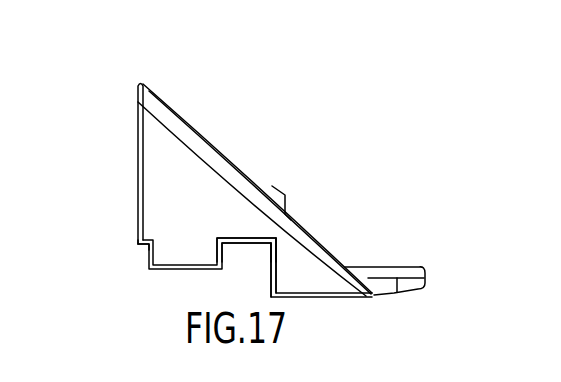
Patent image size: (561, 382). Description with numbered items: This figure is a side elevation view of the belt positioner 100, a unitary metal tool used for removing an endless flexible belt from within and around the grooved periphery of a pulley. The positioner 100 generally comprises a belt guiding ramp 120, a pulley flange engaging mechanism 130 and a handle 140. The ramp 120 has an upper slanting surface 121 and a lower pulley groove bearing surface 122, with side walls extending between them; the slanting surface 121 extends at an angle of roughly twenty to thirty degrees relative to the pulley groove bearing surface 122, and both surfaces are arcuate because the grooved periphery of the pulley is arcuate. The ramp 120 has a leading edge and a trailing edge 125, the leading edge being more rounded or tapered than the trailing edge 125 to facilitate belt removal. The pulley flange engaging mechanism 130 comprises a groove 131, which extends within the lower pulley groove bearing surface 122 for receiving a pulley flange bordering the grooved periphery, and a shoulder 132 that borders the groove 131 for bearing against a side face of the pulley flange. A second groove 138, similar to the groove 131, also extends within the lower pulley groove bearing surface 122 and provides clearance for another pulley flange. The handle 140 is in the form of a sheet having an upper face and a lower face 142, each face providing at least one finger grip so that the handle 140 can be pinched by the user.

The belt positioner 100 is at (112, 249).
The belt guiding ramp 120 is at (230, 142).
The upper slanting surface 121 is at (198, 133).
The lower pulley groove bearing surface 122 is at (183, 270).
The trailing edge 125 is at (188, 142).
The pulley flange engaging mechanism 130 is at (256, 238).
The groove 131 is at (240, 251).
The shoulder 132 is at (279, 271).
The second groove 138 is at (140, 247).
The handle 140 is at (400, 263).
The lower face 142 is at (405, 295).